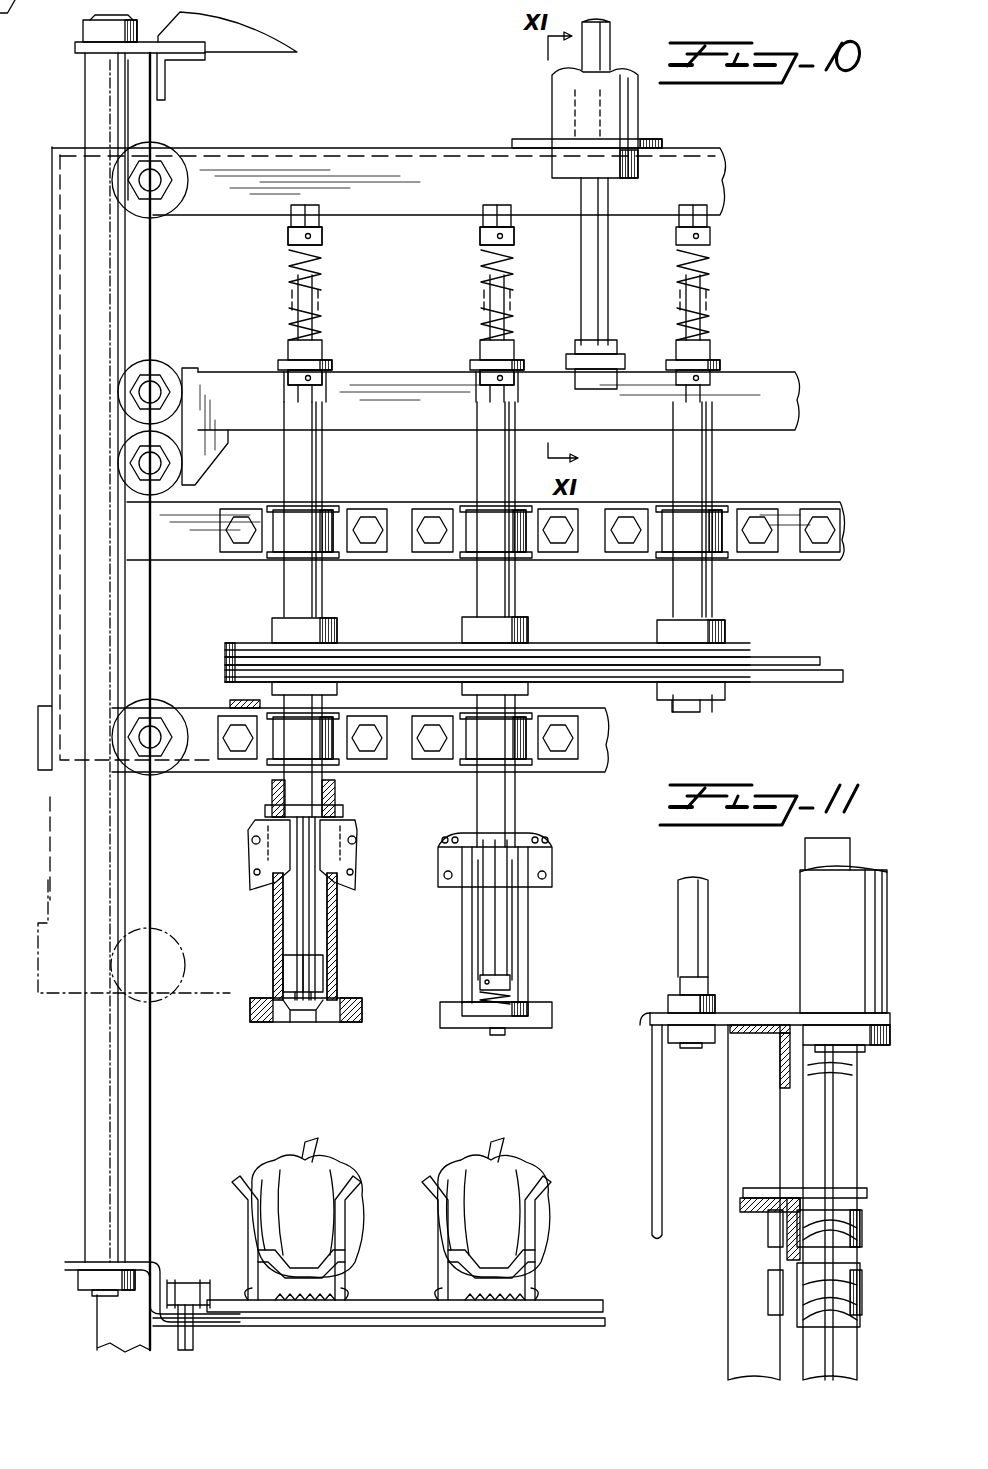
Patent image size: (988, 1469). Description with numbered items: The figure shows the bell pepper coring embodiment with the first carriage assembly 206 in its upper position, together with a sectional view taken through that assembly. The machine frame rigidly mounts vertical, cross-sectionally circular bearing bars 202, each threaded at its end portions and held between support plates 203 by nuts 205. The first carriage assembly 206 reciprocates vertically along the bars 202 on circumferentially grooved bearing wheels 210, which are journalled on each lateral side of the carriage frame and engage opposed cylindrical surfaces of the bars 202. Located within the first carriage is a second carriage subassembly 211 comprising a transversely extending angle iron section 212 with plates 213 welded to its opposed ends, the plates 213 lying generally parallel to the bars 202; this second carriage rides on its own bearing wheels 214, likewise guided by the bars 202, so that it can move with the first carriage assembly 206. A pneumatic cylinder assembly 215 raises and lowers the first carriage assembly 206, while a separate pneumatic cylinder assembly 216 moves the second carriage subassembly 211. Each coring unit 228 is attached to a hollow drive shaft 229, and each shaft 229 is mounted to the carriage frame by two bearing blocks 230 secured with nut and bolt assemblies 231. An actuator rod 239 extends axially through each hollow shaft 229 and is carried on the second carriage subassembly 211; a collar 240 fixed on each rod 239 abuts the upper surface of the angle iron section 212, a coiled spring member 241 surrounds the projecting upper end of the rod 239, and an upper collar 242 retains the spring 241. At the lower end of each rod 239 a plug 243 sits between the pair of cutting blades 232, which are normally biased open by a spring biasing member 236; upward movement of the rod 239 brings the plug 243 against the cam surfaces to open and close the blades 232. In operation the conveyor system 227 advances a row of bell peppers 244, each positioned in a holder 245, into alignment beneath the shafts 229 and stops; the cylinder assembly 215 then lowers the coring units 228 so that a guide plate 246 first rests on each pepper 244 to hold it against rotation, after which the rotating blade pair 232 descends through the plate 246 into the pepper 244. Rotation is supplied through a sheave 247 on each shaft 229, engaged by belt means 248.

In FIG. 10, the bearing bar 202 is at (90, 1098).
In FIG. 11, the bearing bar 202 is at (820, 1352).
In FIG. 10, the support plate 203 is at (75, 50).
In FIG. 10, the nut 205 is at (82, 32).
In FIG. 10, the first carriage assembly 206 is at (700, 150).
In FIG. 11, the first carriage assembly 206 is at (762, 1012).
In FIG. 10, the bearing wheel 210 is at (175, 160).
In FIG. 11, the bearing wheel 210 is at (835, 1068).
In FIG. 10, the second carriage subassembly 211 is at (742, 372).
In FIG. 11, the second carriage subassembly 211 is at (786, 1232).
In FIG. 10, the angle iron section 212 is at (368, 377).
In FIG. 10, the plate 213 is at (190, 372).
In FIG. 10, the bearing wheel 214 is at (165, 362).
In FIG. 11, the bearing wheel 214 is at (830, 1240).
In FIG. 10, the pneumatic cylinder assembly 215 is at (606, 30).
In FIG. 11, the pneumatic cylinder assembly 215 is at (680, 924).
In FIG. 10, the pneumatic cylinder assembly 216 is at (632, 106).
In FIG. 11, the pneumatic cylinder assembly 216 is at (810, 933).
In FIG. 10, the conveyor system 227 is at (205, 1280).
In FIG. 10, the coring unit 228 is at (335, 952).
In FIG. 10, the hollow drive shaft 229 is at (288, 586).
In FIG. 10, the bearing block 230 is at (462, 508).
In FIG. 10, the nut and bolt assembly 231 is at (432, 540).
In FIG. 10, the cutting blade 232 is at (300, 952).
In FIG. 10, the spring biasing member 236 is at (535, 842).
In FIG. 10, the actuator rod 239 is at (484, 392).
In FIG. 10, the collar 240 is at (288, 378).
In FIG. 10, the coiled spring member 241 is at (322, 265).
In FIG. 10, the upper collar 242 is at (322, 232).
In FIG. 10, the plug 243 is at (290, 972).
In FIG. 10, the bell pepper 244 is at (440, 1175).
In FIG. 10, the holder 245 is at (430, 1268).
In FIG. 10, the guide plate 246 is at (362, 1025).
In FIG. 10, the sheave 247 is at (448, 643).
In FIG. 10, the belt means 248 is at (770, 656).